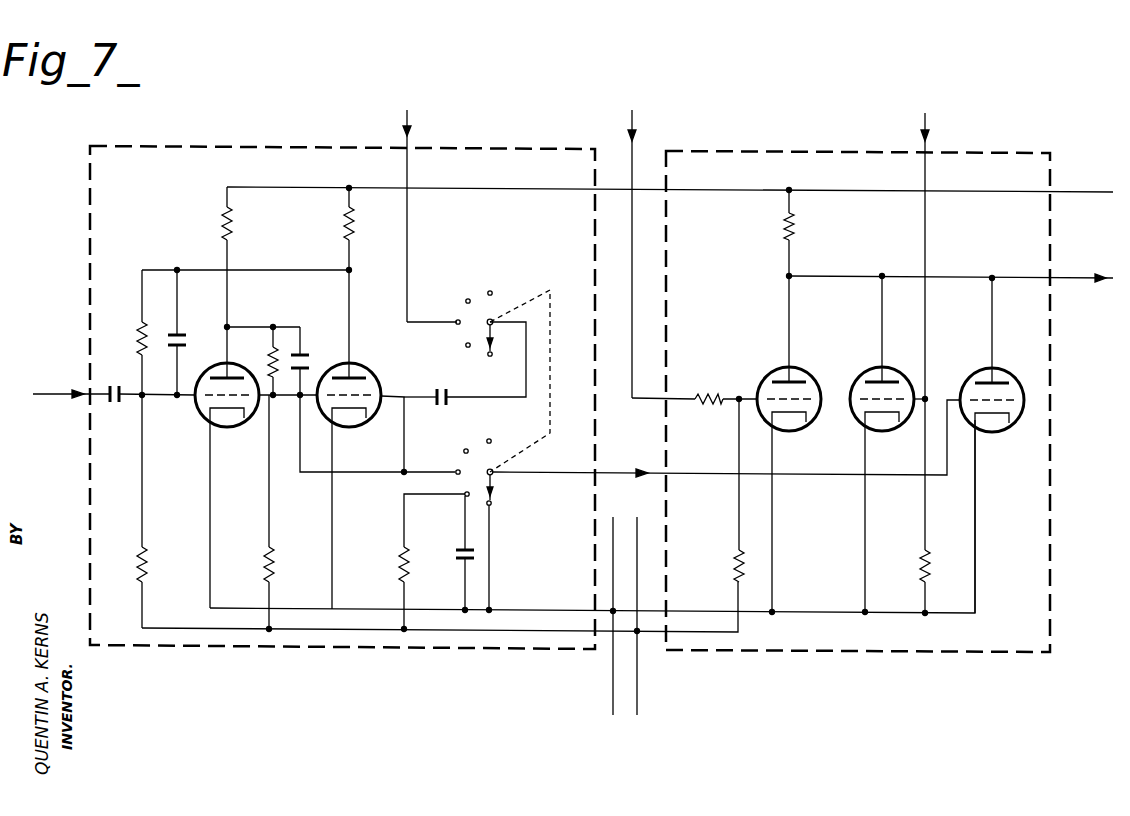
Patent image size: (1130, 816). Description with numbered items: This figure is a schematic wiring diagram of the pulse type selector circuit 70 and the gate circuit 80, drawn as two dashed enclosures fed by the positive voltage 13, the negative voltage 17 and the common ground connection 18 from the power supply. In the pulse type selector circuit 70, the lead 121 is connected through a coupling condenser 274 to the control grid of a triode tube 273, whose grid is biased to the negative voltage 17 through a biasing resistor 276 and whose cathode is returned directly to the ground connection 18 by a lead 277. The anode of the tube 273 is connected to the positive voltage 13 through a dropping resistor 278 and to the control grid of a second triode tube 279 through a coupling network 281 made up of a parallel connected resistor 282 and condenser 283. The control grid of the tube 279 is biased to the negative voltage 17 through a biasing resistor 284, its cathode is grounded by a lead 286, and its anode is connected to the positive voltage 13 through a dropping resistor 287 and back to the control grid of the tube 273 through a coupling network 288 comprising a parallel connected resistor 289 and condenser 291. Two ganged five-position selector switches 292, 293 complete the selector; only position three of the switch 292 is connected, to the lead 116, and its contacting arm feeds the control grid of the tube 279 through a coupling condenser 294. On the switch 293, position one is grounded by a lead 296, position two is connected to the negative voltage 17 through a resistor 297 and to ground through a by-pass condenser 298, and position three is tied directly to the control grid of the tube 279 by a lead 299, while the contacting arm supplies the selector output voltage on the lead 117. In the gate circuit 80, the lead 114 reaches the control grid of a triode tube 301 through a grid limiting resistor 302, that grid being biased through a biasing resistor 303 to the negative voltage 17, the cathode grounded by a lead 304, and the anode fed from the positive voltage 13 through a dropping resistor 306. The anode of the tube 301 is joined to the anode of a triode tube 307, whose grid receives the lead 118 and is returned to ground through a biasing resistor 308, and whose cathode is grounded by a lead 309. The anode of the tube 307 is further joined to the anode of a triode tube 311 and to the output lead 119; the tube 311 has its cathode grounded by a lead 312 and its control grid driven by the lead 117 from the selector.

The pulse type selector circuit 70 is at (345, 142).
The gate circuit 80 is at (850, 151).
The positive voltage 13 is at (626, 187).
The negative voltage 17 is at (187, 617).
The ground connection 18 is at (313, 603).
The lead 114 is at (633, 118).
The lead 116 is at (408, 118).
The lead 117 is at (634, 471).
The lead 118 is at (926, 125).
The lead 119 is at (1110, 276).
The lead 121 is at (66, 389).
The triode tube 273 is at (224, 363).
The coupling condenser 274 is at (113, 404).
The biasing resistor 276 is at (143, 567).
The lead 277 is at (211, 478).
The dropping resistor 278 is at (222, 220).
The triode tube 279 is at (391, 350).
The coupling network 281 is at (325, 298).
The resistor 282 is at (270, 352).
The condenser 283 is at (335, 341).
The biasing resistor 284 is at (264, 565).
The lead 286 is at (333, 514).
The dropping resistor 287 is at (344, 229).
The coupling network 288 is at (159, 283).
The resistor 289 is at (143, 328).
The condenser 291 is at (206, 325).
The selector switch 292 is at (492, 307).
The selector switch 293 is at (482, 462).
The coupling condenser 294 is at (444, 386).
The lead 296 is at (490, 553).
The resistor 297 is at (396, 566).
The by-pass condenser 298 is at (453, 552).
The lead 299 is at (396, 472).
The triode tube 301 is at (780, 368).
The grid limiting resistor 302 is at (712, 372).
The biasing resistor 303 is at (732, 569).
The lead 304 is at (773, 570).
The dropping resistor 306 is at (797, 227).
The triode tube 307 is at (878, 368).
The biasing resistor 308 is at (920, 569).
The lead 309 is at (864, 535).
The triode tube 311 is at (990, 372).
The lead 312 is at (976, 570).